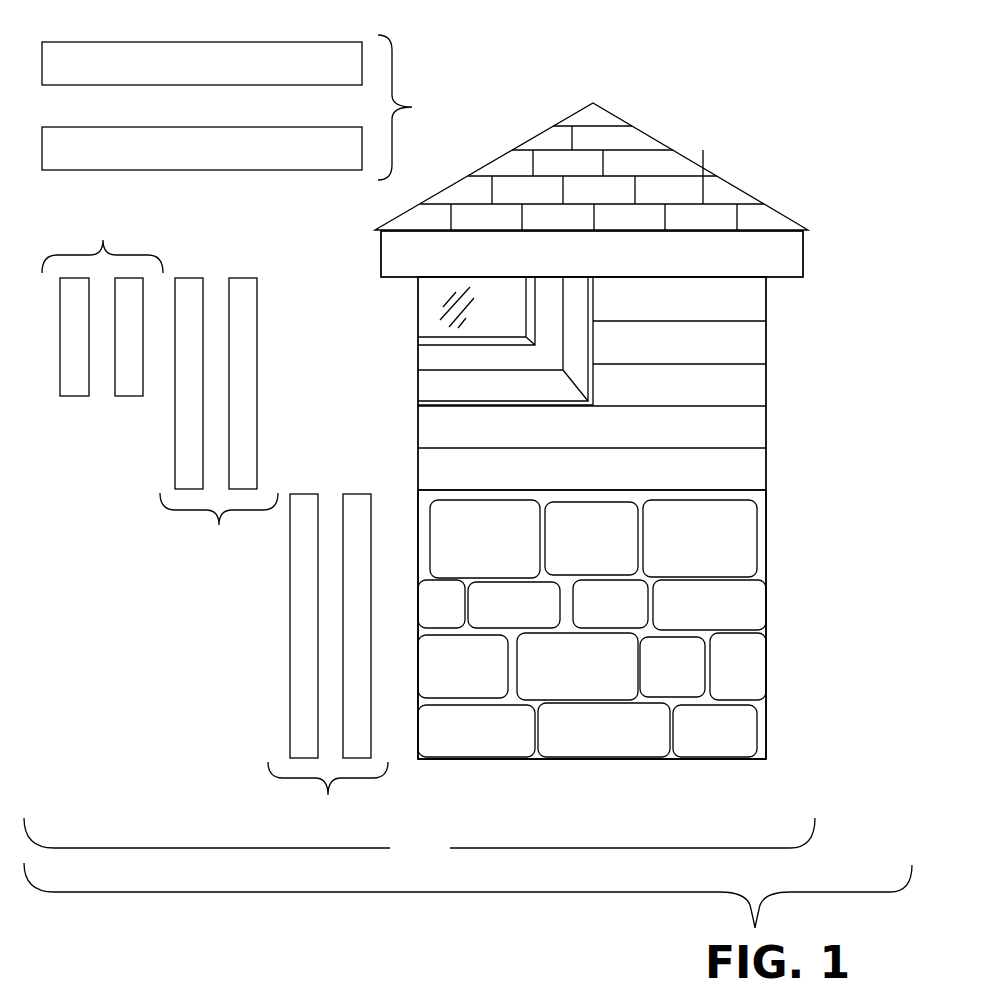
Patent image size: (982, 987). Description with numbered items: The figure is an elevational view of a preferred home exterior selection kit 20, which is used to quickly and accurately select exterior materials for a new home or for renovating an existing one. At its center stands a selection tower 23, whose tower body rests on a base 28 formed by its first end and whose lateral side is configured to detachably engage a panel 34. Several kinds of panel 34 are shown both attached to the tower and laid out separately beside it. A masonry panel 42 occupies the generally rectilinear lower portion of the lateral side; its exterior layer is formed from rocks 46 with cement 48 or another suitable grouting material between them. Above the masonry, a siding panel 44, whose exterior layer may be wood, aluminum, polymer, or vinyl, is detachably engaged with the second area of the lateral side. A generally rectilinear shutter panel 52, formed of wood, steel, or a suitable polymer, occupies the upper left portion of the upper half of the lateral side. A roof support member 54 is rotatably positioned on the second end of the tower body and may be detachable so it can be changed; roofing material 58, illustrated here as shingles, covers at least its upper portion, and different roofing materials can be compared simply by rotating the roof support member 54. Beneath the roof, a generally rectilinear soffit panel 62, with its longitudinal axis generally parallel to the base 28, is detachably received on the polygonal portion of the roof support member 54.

The home exterior selection kit 20 is at (468, 873).
The selection tower 23 is at (738, 150).
The base 28 is at (787, 735).
The panel 34 is at (772, 260).
The masonry panel 42 is at (870, 592).
The siding panel 44 is at (830, 435).
The rocks 46 is at (610, 555).
The cement 48 is at (418, 505).
The shutter panel 52 is at (485, 292).
The roof support member 54 is at (662, 165).
The roofing material 58 is at (551, 160).
The soffit panel 62 is at (606, 271).